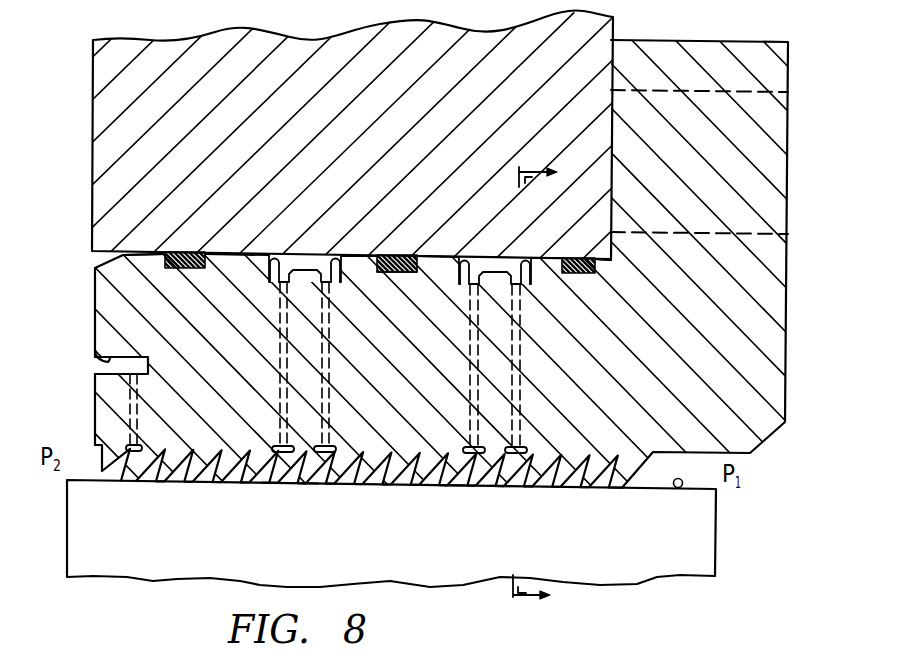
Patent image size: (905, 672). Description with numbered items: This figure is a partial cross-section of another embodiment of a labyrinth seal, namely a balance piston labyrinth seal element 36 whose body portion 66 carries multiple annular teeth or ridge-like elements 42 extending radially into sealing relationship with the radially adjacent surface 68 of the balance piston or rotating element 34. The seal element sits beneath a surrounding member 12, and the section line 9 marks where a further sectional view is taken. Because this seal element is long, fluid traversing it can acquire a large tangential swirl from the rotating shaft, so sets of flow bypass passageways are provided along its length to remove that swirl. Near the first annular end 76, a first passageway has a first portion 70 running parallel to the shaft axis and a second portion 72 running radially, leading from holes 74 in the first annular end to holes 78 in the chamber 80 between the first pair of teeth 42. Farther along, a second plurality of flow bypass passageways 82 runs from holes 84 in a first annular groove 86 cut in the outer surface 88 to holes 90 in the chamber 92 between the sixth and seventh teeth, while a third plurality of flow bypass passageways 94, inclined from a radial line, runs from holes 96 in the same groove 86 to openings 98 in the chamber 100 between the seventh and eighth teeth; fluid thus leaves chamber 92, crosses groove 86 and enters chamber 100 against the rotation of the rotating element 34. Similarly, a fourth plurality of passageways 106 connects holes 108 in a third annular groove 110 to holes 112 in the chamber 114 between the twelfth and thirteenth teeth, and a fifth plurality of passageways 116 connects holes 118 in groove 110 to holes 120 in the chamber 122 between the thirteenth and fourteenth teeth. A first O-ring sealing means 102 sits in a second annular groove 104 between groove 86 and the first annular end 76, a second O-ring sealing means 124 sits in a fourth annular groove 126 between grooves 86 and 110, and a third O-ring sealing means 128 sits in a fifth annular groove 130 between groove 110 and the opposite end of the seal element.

The upper block / wafer holder 12 is at (375, 131).
The balance piston labyrinth seal element 36 is at (720, 162).
The body portion 66 is at (695, 354).
The balance piston or rotating element 34 is at (313, 571).
The annular teeth or ridge-like elements 42 is at (625, 487).
The radially adjacent surface 68 is at (674, 488).
The first portion 70 is at (100, 362).
The second portion 72 is at (129, 405).
The first plurality of openings or holes 74 is at (93, 376).
The first annular end 76 is at (93, 324).
The second plurality of openings or holes 78 is at (147, 442).
The space or chamber 80 is at (120, 473).
The second plurality of flow bypass passageways 82 is at (281, 349).
The third plurality of circumferentially spaced-apart openings or holes 84 is at (263, 272).
The first annular groove 86 is at (336, 256).
The circumferentially extending outer surface 88 is at (354, 256).
The fourth plurality of circumferentially spaced-apart openings or holes 90 is at (268, 446).
The space or chamber 92 is at (273, 474).
The third plurality of flow bypass passageways 94 is at (331, 347).
The fifth plurality of circumferentially spaced-apart openings or holes 96 is at (342, 273).
The sixth plurality of circumferentially spaced-apart openings 98 is at (334, 446).
The space or chamber 100 is at (310, 474).
The first annular sealing means 102 is at (185, 252).
The second annular groove or slotted recess 104 is at (178, 259).
The fourth plurality of flow bypass passageways 106 is at (470, 368).
The seventh plurality of circumferentially spaced-apart openings or holes 108 is at (462, 272).
The third annular groove 110 is at (527, 258).
The eighth plurality of circumferentially spaced-apart openings or holes 112 is at (463, 447).
The space or chamber 114 is at (455, 476).
The fifth plurality of flow bypass passageways 116 is at (521, 368).
The ninth plurality of circumferentially spaced-apart openings or holes 118 is at (532, 274).
The tenth plurality of circumferentially spaced-apart openings or holes 120 is at (530, 447).
The space or chamber 122 is at (500, 477).
The second annular sealing means 124 is at (405, 255).
The fourth annular groove or slotted recess 126 is at (395, 274).
The third annular sealing means 128 is at (575, 258).
The fifth annular groove or slotted recess 130 is at (596, 274).
The section line 9- 9 is at (545, 386).